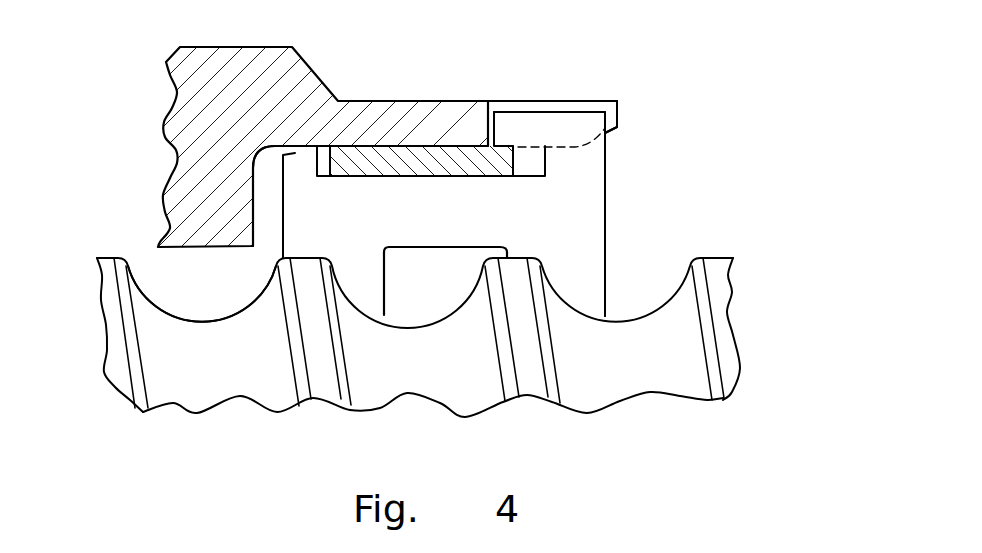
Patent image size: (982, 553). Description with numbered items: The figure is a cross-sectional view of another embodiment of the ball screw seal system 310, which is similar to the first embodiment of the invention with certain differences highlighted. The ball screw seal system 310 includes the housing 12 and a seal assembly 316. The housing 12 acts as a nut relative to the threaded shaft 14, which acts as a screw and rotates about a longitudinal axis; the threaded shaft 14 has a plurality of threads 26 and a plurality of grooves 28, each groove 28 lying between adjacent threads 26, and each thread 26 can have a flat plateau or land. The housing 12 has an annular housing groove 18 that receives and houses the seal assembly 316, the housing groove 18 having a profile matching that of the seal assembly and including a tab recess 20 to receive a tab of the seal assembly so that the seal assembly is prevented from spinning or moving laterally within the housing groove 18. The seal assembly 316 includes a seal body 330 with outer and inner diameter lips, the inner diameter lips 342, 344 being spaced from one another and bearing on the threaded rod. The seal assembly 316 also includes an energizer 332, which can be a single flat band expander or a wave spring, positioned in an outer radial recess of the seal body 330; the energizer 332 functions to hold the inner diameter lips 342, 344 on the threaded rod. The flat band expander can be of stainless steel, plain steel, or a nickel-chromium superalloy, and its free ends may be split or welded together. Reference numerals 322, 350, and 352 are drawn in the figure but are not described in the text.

The housing 12 is at (240, 47).
The threaded shaft 14 is at (107, 330).
The housing groove 18 is at (255, 217).
The tab recess 20 is at (496, 103).
The thread 26 is at (323, 390).
The groove 28 is at (193, 376).
The ball screw seal system 310 is at (714, 122).
The seal assembly 316 is at (633, 207).
The top wall 322 is at (565, 110).
The seal body 330 is at (420, 218).
The energizer 332 is at (513, 163).
The inner diameter lip 342 is at (560, 279).
The inner diameter lip 344 is at (381, 280).
The foot 350 is at (623, 304).
The bridge plate 352 is at (403, 304).